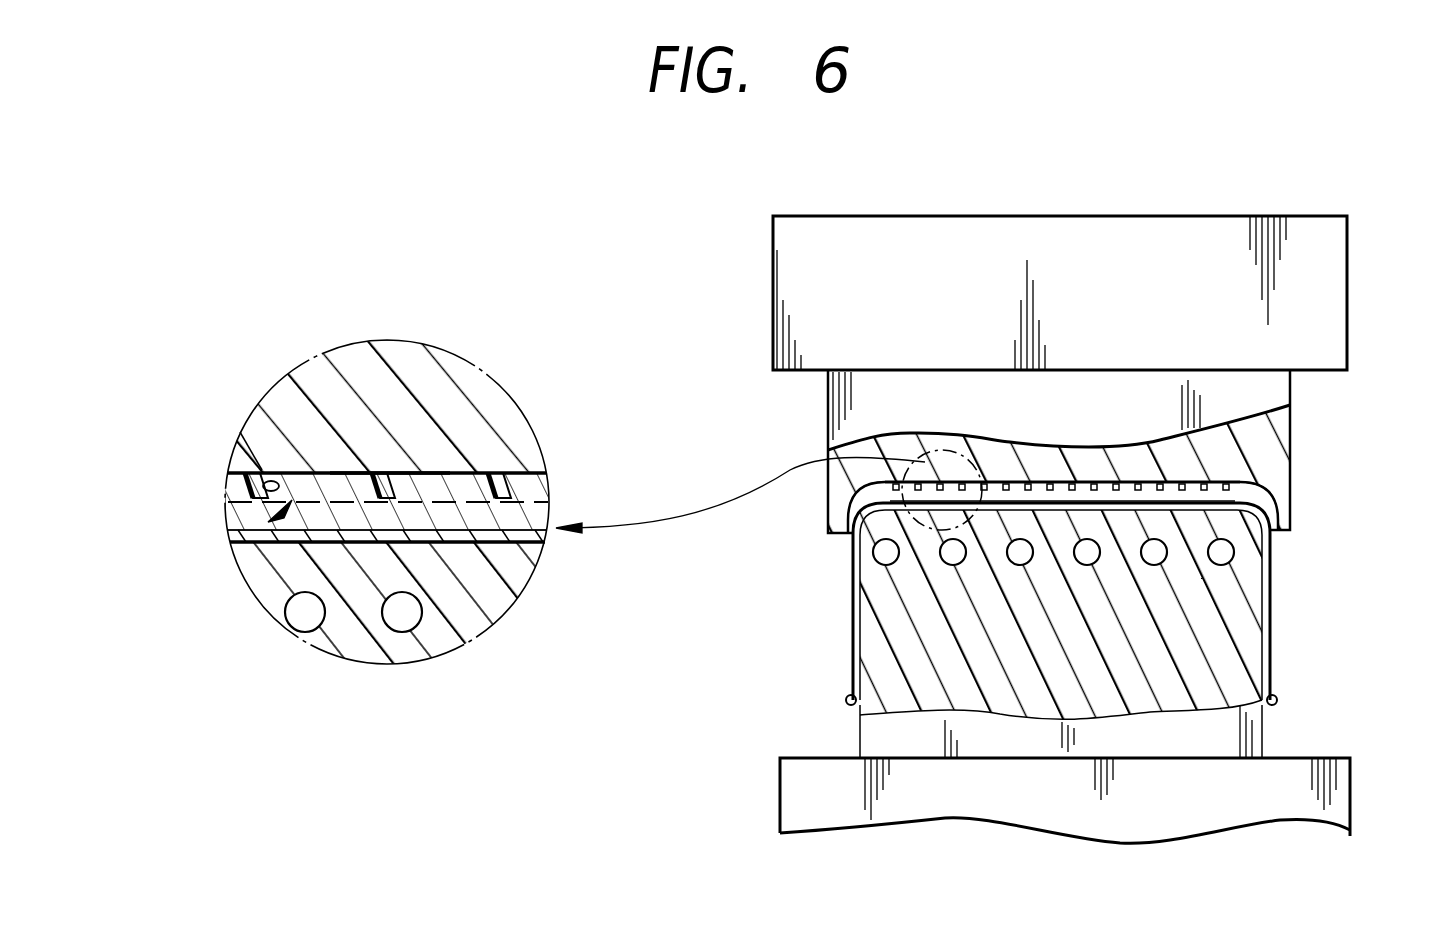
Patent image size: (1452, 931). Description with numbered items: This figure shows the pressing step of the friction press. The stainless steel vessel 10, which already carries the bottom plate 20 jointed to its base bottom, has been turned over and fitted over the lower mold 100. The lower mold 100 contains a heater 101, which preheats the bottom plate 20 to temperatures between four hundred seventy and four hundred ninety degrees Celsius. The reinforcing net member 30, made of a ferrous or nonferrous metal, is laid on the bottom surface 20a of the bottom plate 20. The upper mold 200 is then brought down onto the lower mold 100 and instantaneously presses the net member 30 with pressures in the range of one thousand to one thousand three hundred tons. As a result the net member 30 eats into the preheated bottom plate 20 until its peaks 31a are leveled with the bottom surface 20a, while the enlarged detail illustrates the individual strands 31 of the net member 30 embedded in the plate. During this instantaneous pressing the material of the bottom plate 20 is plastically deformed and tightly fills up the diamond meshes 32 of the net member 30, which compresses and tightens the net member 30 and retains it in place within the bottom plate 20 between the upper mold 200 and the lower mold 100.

The stainless steel vessel 10 is at (1284, 627).
The bottom plate 20 is at (1272, 480).
The bottom surface 20a is at (447, 472).
The net member 30 is at (237, 553).
The projection 31 is at (543, 465).
The peaks 31a is at (257, 470).
The diamond meshes 32 is at (250, 497).
The lower mold 100 is at (1356, 795).
The heater 101 is at (1232, 549).
The upper mold 200 is at (1352, 300).